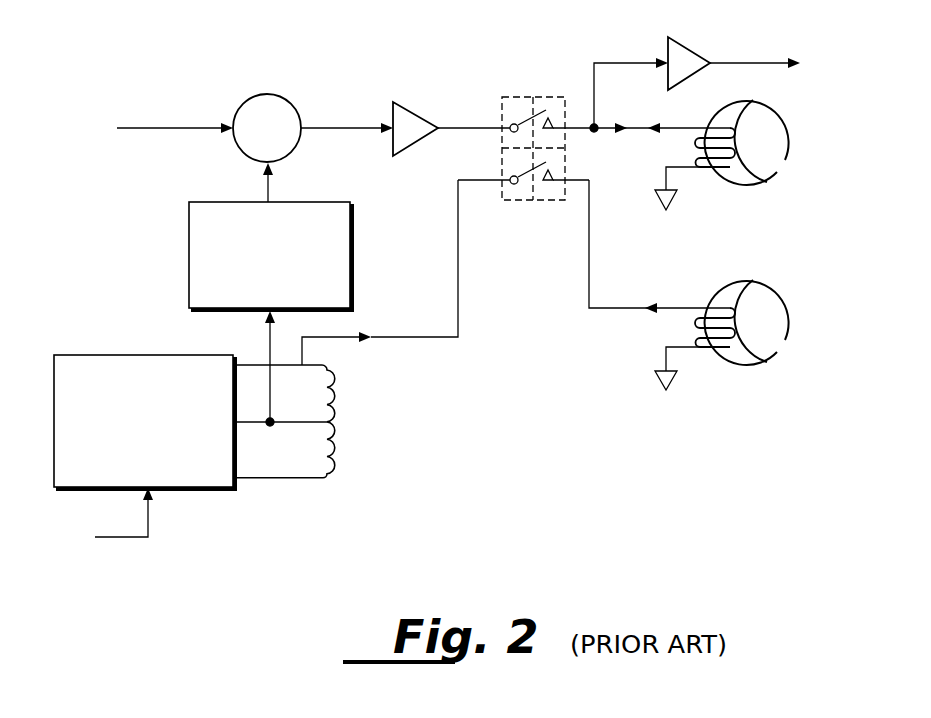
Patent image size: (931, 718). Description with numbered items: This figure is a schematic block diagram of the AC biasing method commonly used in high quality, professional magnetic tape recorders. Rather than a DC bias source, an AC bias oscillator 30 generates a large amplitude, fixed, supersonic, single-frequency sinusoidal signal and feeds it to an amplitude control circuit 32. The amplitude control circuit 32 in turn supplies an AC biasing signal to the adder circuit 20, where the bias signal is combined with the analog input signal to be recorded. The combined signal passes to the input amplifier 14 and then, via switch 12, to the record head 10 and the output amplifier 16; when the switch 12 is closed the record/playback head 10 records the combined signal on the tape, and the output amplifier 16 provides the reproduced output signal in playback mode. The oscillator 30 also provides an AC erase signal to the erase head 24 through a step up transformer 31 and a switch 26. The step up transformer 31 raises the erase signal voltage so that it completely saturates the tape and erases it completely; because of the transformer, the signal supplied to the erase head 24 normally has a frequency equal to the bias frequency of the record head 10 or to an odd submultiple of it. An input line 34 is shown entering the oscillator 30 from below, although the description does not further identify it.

The record/playback head 10 is at (780, 117).
The switch 12 is at (532, 97).
The input amplifier 14 is at (412, 108).
The output amplifier 16 is at (688, 47).
The adder circuit 20 is at (268, 94).
The erase head 24 is at (783, 298).
The switch 26 is at (529, 201).
The AC bias oscillator 30 is at (187, 492).
The step up transformer 31 is at (340, 443).
The amplitude control circuit 32 is at (356, 262).
The control input 34 is at (124, 528).